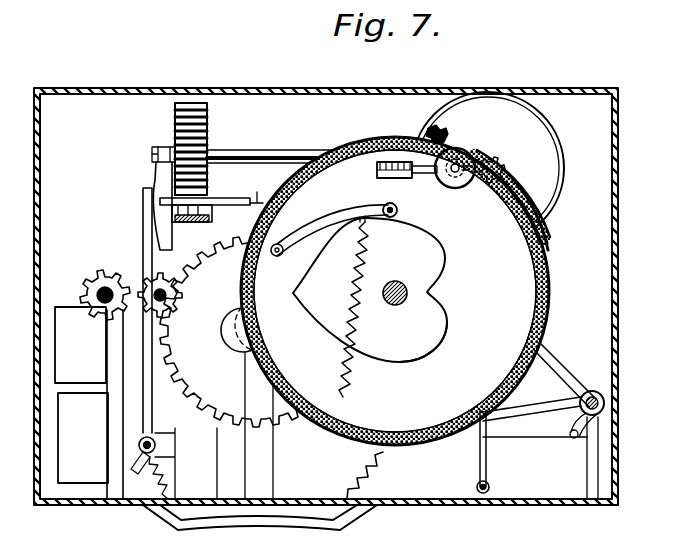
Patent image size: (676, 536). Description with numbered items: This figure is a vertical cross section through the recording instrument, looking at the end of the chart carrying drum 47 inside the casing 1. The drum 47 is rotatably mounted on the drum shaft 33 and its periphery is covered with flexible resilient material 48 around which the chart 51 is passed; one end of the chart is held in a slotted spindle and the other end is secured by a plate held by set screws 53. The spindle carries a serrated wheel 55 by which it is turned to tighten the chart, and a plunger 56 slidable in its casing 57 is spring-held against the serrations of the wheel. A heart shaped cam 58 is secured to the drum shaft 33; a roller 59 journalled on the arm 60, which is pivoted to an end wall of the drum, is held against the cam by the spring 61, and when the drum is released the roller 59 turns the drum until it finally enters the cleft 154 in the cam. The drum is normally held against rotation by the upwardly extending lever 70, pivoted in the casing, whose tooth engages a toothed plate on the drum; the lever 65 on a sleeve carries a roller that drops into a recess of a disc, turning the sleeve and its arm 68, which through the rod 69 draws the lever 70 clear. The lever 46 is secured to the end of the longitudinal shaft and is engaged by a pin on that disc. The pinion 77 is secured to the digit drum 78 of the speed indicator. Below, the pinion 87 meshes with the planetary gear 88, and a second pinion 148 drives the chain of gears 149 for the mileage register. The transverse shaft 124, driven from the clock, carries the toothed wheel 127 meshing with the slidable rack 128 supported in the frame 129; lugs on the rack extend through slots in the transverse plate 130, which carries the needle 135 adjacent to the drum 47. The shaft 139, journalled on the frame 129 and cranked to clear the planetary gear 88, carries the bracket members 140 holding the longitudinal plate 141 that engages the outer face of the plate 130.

The casing 1 is at (619, 310).
The drum shaft 33 is at (394, 282).
The lever 46 is at (534, 411).
The chart carrying drum 47 is at (395, 291).
The flexible resilient material 48 is at (548, 285).
The chart 51 is at (548, 265).
The set screws 53 is at (448, 132).
The wheel 55 is at (461, 188).
The plunger 56 is at (422, 178).
The casing 57 is at (402, 178).
The heart shaped cam 58 is at (442, 335).
The roller 59 is at (398, 211).
The arm 60 is at (318, 223).
The spring 61 is at (357, 371).
The lever 65 is at (556, 359).
The arm 68 is at (564, 428).
The rod 69 is at (525, 438).
The lever 70 is at (478, 458).
The pinion 77 is at (505, 173).
The digit drum 78 is at (568, 185).
The pinion 87 is at (88, 268).
The planetary gear 88 is at (125, 403).
The transverse shaft 124 is at (273, 152).
The toothed wheel 127 is at (207, 127).
The rack 128 is at (192, 208).
The frame 129 is at (203, 223).
The transverse plate 130 is at (160, 200).
The needle 135 is at (216, 188).
The shaft 139 is at (139, 447).
The bracket members 140 is at (143, 356).
The longitudinal plate 141 is at (152, 235).
The second pinion 148 is at (84, 289).
The chain of gears 149 is at (173, 345).
The cleft 154 is at (430, 289).